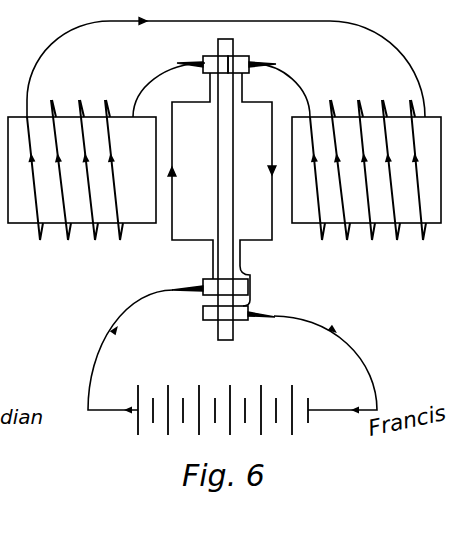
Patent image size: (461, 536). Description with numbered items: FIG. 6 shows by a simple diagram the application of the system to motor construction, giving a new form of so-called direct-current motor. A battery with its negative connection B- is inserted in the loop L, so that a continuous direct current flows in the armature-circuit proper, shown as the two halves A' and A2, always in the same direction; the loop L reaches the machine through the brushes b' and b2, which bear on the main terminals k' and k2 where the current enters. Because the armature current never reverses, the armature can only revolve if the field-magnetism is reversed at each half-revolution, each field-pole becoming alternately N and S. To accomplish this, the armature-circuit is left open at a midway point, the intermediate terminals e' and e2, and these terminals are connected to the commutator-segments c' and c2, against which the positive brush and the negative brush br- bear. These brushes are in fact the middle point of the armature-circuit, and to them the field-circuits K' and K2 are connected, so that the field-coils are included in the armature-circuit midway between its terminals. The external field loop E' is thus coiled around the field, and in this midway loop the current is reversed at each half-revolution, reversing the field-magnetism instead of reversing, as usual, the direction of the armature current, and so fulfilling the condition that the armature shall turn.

The intermediate terminal E' is at (226, 68).
The field-circuit K2 is at (82, 183).
The field-circuit K' is at (366, 184).
The south field-pole S is at (146, 173).
The north field-pole N is at (310, 199).
The commutator-segment c' is at (215, 64).
The commutator-segment c2 is at (238, 64).
The brush br- is at (260, 54).
The armature-circuit A' is at (190, 176).
The armature-circuit A2 is at (258, 189).
The intermediate terminal e' is at (200, 110).
The intermediate terminal e2 is at (242, 110).
The main terminal k' is at (225, 287).
The main terminal k2 is at (225, 313).
The brush b' is at (187, 280).
The brush b2 is at (263, 307).
The loop L is at (232, 352).
The battery negative terminal B- is at (283, 410).